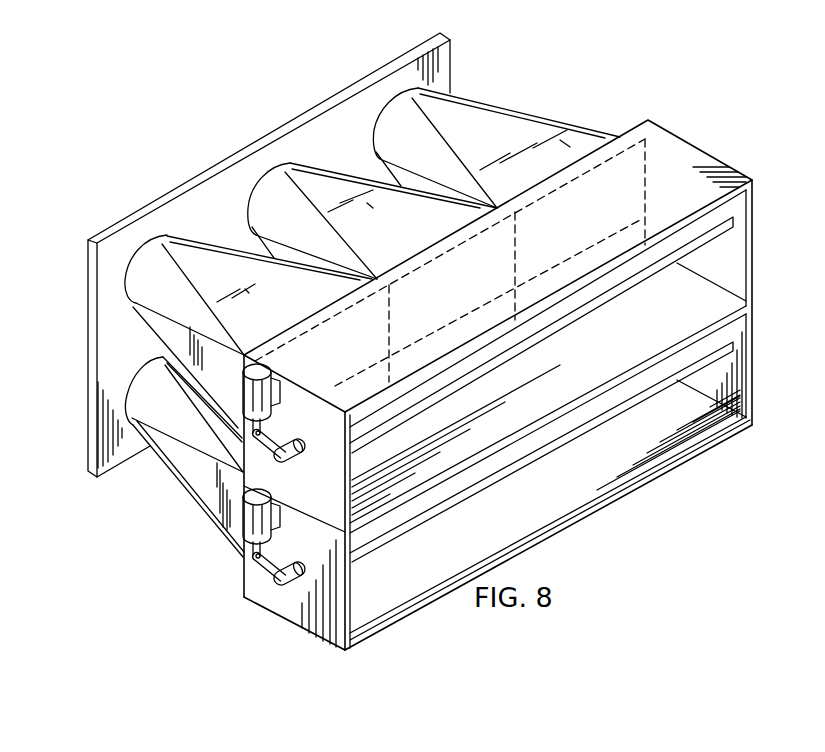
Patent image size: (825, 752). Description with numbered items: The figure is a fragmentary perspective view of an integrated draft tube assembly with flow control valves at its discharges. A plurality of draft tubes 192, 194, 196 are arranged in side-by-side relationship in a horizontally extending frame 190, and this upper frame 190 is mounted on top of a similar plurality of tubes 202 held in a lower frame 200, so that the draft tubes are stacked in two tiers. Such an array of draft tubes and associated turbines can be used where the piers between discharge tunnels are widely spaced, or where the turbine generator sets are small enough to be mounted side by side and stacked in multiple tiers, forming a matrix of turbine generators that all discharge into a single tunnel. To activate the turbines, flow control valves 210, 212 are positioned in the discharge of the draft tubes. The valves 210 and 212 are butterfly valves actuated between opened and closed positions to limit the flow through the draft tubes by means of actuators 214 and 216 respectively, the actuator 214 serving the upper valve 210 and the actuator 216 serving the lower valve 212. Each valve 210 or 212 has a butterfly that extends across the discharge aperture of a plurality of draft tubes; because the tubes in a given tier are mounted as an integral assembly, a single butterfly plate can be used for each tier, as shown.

The frame 190 is at (697, 168).
The draft tube 192 is at (215, 245).
The draft tube 194 is at (342, 173).
The draft tube 196 is at (495, 106).
The frame 200 is at (754, 319).
The draft tubes 202 is at (134, 381).
The flow control valve 210 is at (643, 278).
The flow control valve 212 is at (636, 405).
The actuator 214 is at (265, 368).
The actuator 216 is at (260, 493).